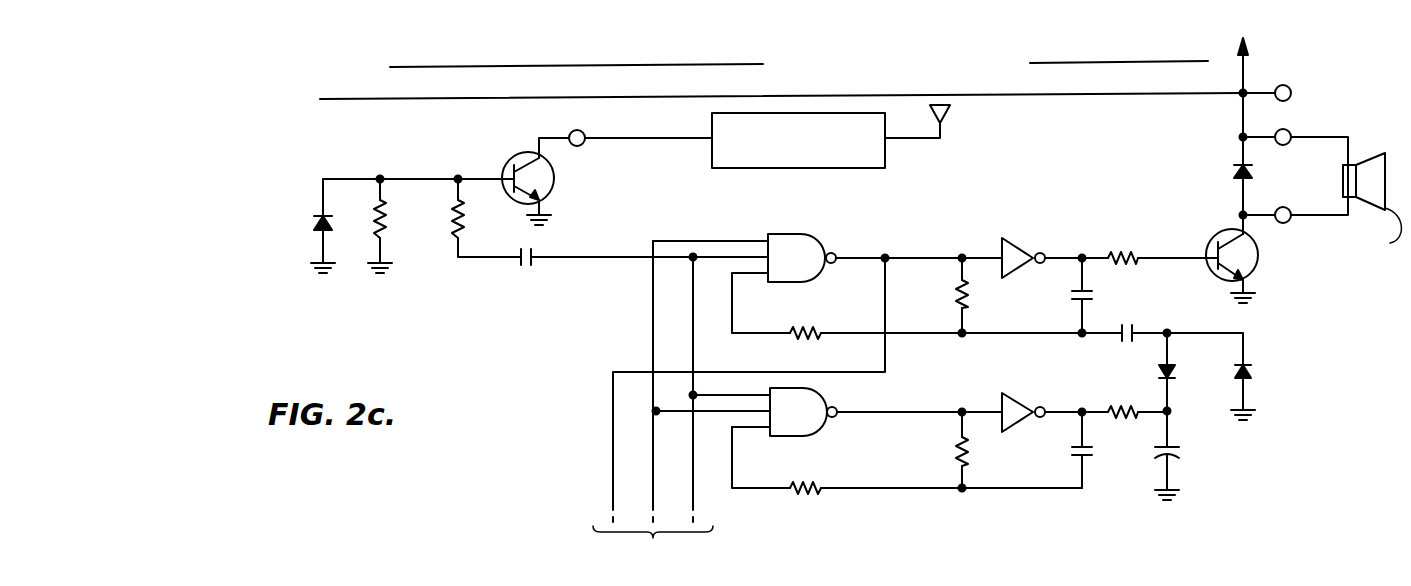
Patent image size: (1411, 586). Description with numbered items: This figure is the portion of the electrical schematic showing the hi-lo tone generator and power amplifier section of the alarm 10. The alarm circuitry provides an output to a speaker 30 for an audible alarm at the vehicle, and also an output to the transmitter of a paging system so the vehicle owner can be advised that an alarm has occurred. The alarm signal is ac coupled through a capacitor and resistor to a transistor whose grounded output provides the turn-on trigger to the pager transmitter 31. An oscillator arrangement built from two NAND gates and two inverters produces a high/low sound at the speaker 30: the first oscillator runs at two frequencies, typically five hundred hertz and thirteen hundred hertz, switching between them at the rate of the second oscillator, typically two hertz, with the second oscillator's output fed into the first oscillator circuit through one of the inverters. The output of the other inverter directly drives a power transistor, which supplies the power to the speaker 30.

The alarm 10 is at (422, 360).
The speaker 30 is at (1343, 187).
The pager transmitter 31 is at (860, 167).